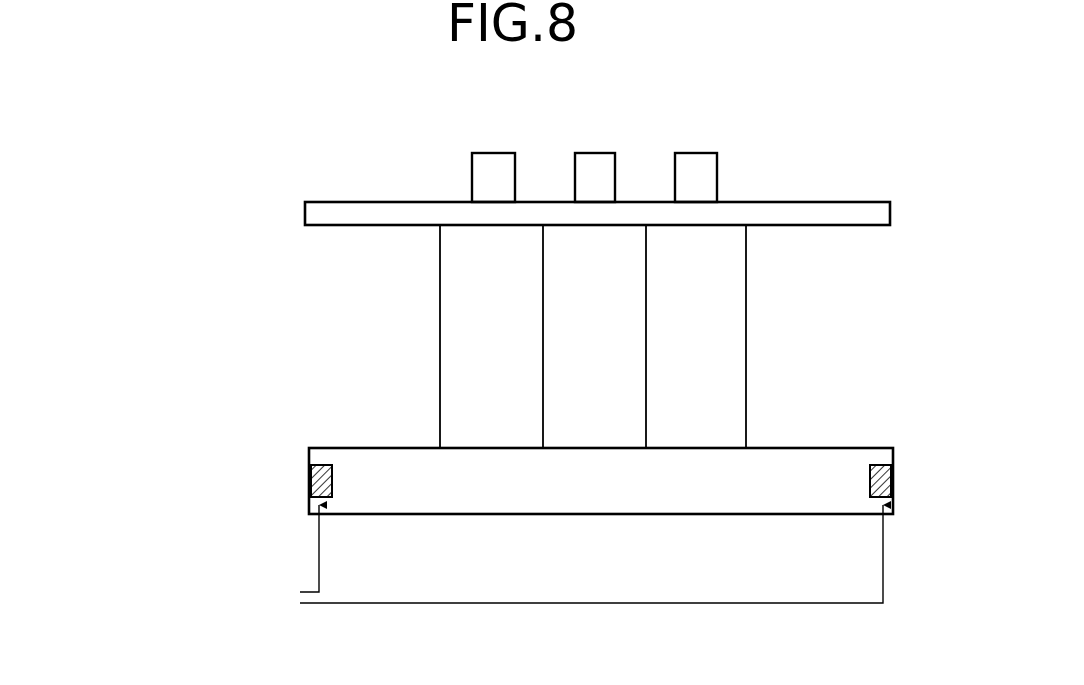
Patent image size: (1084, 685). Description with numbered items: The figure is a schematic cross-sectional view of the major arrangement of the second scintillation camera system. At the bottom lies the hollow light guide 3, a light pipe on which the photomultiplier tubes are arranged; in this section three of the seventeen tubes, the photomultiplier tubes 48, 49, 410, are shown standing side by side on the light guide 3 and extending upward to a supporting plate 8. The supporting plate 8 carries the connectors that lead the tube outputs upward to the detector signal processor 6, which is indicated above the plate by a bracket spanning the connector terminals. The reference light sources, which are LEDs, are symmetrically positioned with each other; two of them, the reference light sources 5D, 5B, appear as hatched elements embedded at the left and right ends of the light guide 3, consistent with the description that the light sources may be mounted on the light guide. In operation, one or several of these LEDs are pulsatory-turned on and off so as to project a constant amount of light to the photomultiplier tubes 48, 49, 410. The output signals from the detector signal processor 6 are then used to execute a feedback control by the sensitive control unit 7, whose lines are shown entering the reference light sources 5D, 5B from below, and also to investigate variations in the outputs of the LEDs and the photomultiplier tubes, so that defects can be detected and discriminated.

The detector signal processor 6 is at (773, 125).
The supporting plate 8 is at (890, 205).
The photomultiplier tube 48 is at (487, 361).
The photomultiplier tube 49 is at (593, 361).
The photomultiplier tube 410 is at (689, 376).
The light guide 3 is at (609, 503).
The reference light source 5D is at (311, 476).
The reference light source 5B is at (892, 481).
The sensitive control unit 7 is at (283, 642).